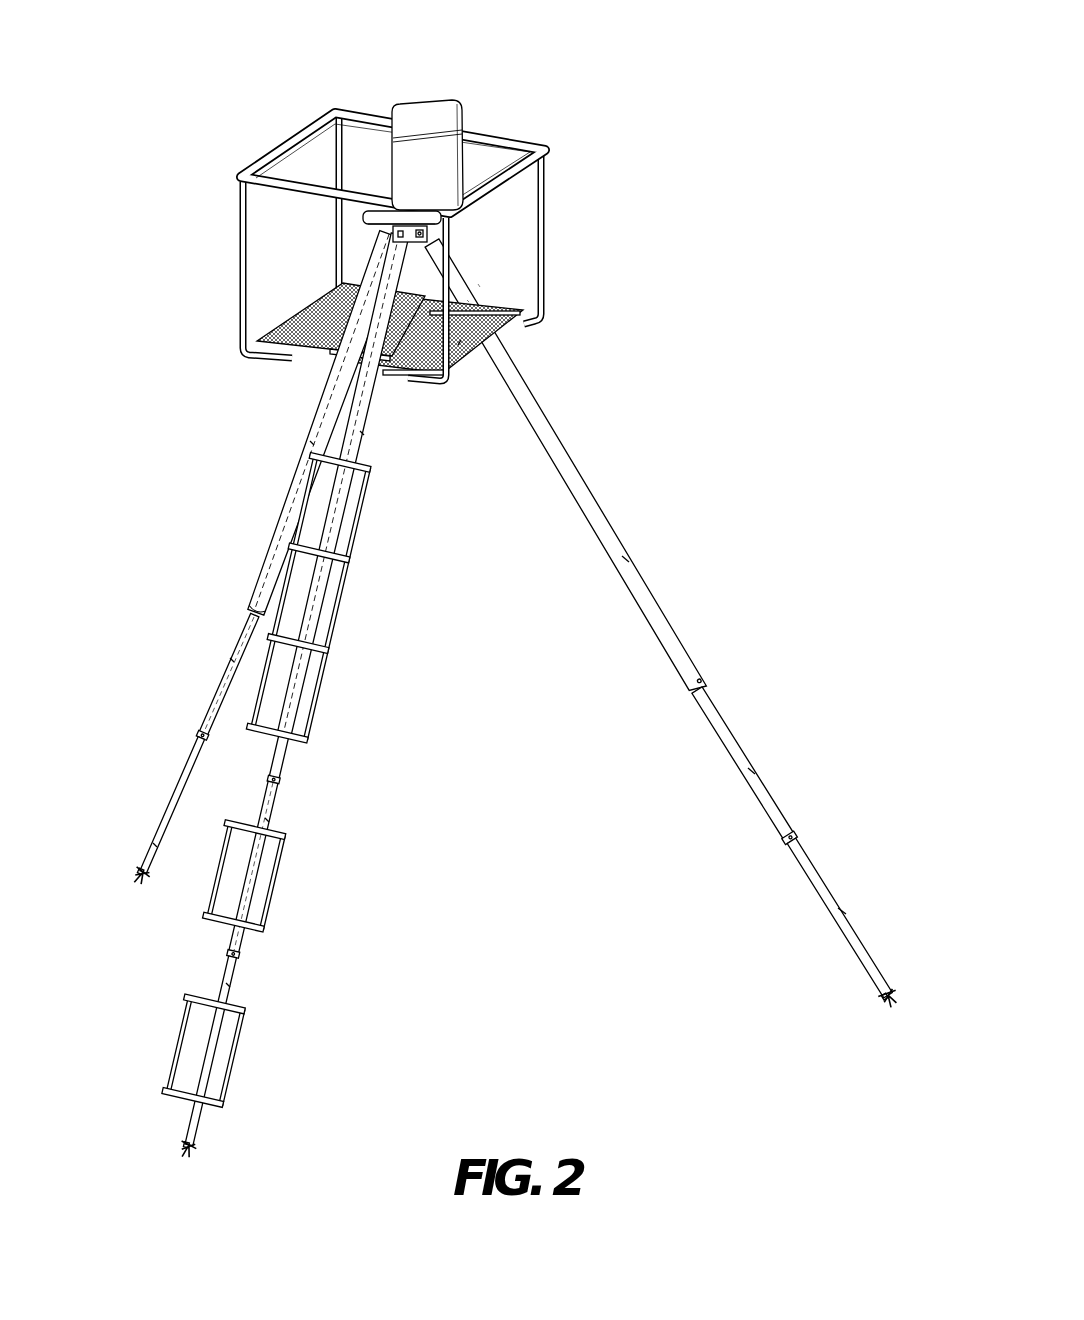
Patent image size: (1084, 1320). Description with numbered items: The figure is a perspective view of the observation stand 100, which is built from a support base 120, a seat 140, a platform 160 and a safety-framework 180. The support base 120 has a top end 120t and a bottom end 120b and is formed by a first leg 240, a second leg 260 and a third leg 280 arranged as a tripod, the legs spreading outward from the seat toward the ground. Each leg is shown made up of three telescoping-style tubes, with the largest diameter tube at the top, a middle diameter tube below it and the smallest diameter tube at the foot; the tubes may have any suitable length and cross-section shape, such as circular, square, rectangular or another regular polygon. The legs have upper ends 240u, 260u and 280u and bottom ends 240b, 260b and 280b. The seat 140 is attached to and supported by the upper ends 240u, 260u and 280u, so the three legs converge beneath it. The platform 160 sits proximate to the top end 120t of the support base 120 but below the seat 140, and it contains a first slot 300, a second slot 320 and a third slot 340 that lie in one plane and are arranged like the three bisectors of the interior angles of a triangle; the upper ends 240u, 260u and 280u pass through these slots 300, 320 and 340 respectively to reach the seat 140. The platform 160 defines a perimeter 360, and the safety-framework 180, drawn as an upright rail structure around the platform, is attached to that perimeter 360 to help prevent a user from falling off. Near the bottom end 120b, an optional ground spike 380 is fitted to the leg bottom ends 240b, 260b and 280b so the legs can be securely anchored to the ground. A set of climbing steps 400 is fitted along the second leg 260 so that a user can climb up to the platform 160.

The observation stand 100 is at (596, 1030).
The support base 120 is at (586, 492).
The top end of support base 120t is at (478, 286).
The bottom end of support base 120b is at (807, 870).
The seat 140 is at (447, 127).
The platform 160 is at (458, 345).
The safety-framework 180 is at (540, 252).
The first leg 240 is at (688, 663).
The upper end of first leg 240u is at (467, 300).
The bottom end of first leg 240b is at (857, 943).
The second leg 260 is at (275, 797).
The upper end of second leg 260u is at (378, 320).
The bottom end of second leg 260b is at (200, 1118).
The third leg 280 is at (220, 700).
The upper end of third leg 280u is at (387, 262).
The bottom end of third leg 280b is at (163, 827).
The first slot 300 is at (497, 313).
The second slot 320 is at (353, 328).
The third slot 340 is at (335, 289).
The perimeter 360 is at (288, 345).
The ground spike 380 is at (902, 1007).
The climbing steps 400 is at (333, 640).